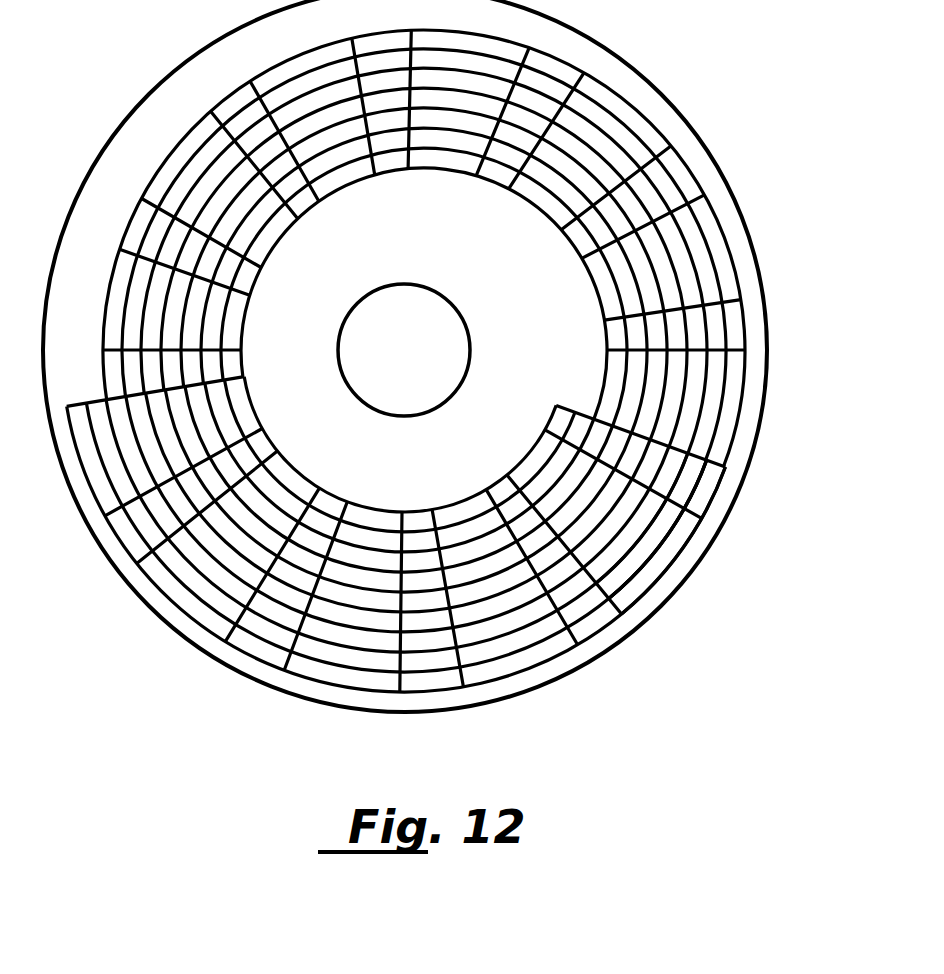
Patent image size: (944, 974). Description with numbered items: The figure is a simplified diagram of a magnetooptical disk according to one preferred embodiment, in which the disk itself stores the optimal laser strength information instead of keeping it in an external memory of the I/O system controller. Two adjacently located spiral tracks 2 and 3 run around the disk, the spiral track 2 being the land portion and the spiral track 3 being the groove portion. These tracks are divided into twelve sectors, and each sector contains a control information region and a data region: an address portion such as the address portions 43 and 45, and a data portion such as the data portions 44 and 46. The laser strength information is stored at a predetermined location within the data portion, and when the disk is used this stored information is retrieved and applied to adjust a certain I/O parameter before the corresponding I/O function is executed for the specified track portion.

The spiral track (land portion) 2 is at (556, 398).
The spiral track (groove portion) 3 is at (582, 400).
The address portion 43 is at (703, 495).
The data portion 44 is at (667, 552).
The address portion 45 is at (688, 473).
The data portion 46 is at (630, 563).